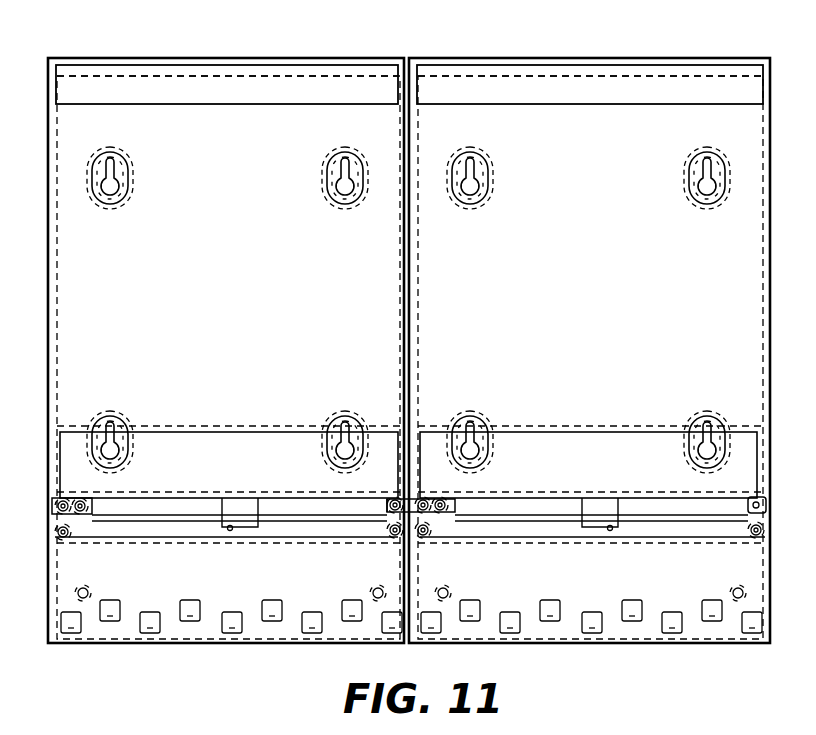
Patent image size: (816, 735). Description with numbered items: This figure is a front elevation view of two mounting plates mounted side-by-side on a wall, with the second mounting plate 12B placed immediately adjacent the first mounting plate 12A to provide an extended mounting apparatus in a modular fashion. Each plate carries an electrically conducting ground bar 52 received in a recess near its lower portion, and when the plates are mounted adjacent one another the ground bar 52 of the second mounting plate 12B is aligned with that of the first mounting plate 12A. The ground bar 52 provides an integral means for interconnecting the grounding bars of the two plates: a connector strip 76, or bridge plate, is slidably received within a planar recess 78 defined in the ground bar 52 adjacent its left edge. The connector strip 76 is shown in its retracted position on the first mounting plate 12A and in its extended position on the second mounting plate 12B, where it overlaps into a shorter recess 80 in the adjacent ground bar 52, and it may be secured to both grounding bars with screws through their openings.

The first mounting plate 12A is at (253, 117).
The second mounting plate 12B is at (513, 117).
The ground bar 52 is at (92, 534).
The connector strip 76 is at (55, 505).
The planar recess 78 is at (95, 505).
The shorter recess 80 is at (387, 504).